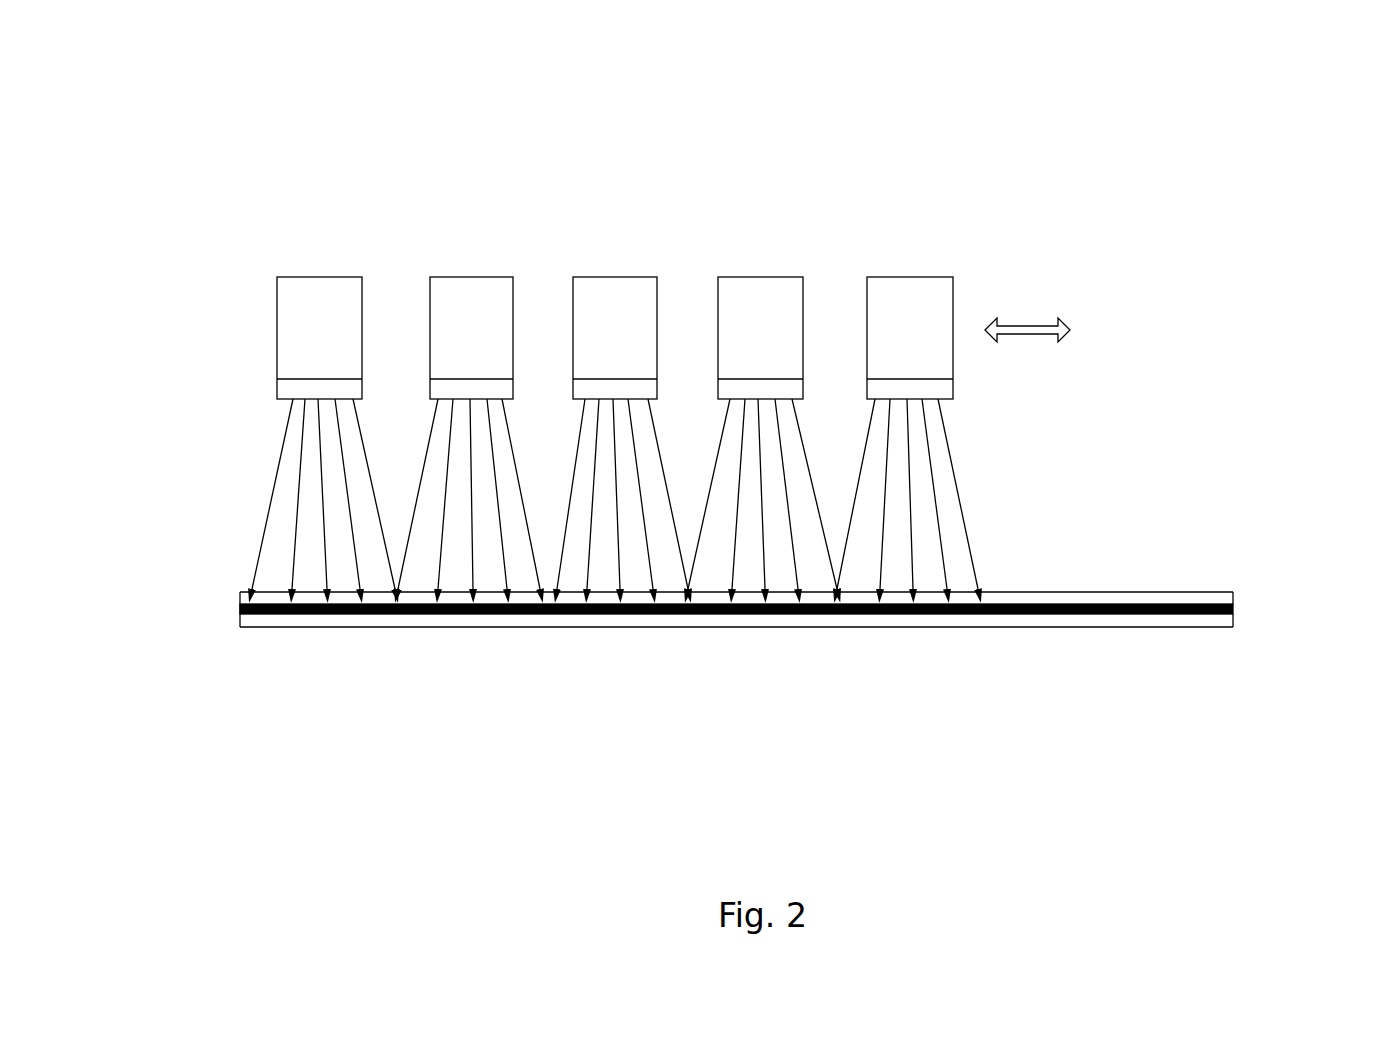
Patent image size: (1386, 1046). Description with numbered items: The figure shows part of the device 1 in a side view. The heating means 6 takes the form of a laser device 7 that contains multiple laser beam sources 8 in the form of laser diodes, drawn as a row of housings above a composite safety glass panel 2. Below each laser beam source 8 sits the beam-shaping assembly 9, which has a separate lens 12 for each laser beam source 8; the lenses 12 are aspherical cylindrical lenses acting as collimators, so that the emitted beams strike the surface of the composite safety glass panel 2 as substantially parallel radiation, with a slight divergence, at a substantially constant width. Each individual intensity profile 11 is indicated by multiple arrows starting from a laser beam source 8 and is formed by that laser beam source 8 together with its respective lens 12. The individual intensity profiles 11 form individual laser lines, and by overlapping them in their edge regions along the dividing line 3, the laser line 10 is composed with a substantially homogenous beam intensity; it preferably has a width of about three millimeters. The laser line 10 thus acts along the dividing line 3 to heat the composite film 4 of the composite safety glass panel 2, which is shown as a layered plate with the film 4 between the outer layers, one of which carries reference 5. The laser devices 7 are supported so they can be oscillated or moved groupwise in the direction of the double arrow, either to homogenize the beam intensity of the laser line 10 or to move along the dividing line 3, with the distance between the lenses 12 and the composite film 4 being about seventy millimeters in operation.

The device 1 is at (209, 181).
The composite safety glass panel 2 is at (1235, 593).
The dividing line 3 is at (1216, 588).
The composite film 4 is at (1235, 602).
The carrier layer 5 is at (1160, 615).
The heating means 6 is at (584, 281).
The laser device 7 is at (272, 333).
The laser beam source 8 is at (600, 300).
The beam-shaping assembly 9 is at (584, 410).
The laser line 10 is at (264, 587).
The individual intensity profile 11 is at (320, 592).
The lens 12 is at (295, 382).